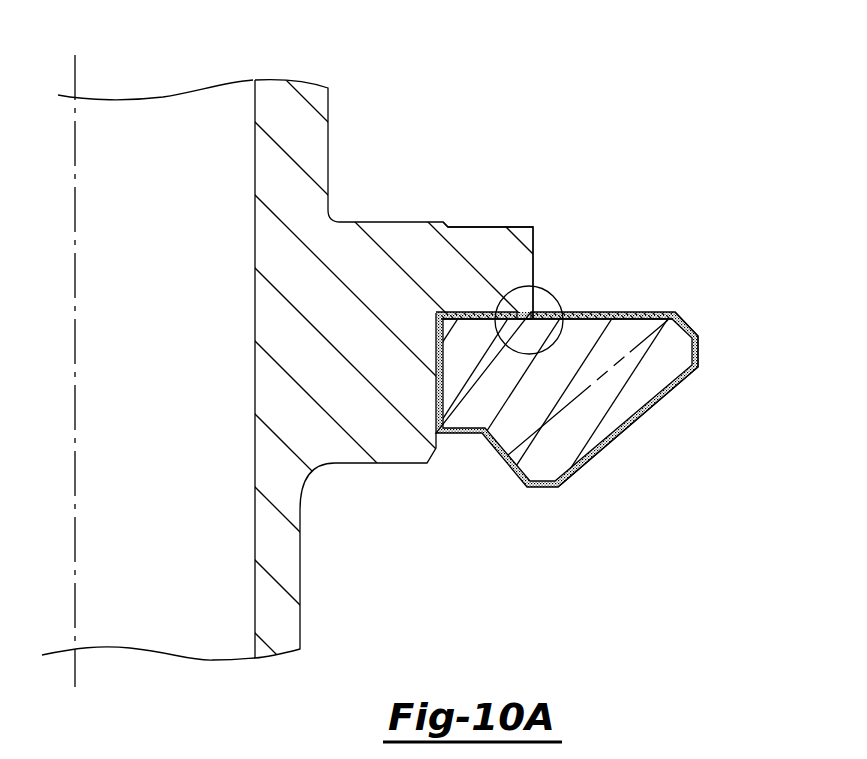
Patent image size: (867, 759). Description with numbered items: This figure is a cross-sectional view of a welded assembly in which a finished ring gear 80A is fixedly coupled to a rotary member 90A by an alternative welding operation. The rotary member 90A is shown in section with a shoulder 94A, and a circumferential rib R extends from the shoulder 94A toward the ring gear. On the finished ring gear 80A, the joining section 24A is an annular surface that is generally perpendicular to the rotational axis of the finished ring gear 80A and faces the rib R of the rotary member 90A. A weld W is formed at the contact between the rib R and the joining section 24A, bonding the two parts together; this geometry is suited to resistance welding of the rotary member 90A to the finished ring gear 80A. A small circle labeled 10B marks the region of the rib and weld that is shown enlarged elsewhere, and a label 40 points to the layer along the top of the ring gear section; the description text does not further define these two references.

The rotary member 90A is at (303, 148).
The shoulder 94A is at (480, 248).
The joining section 24A is at (647, 306).
The top layer / weld strip 40 is at (580, 316).
The circumferential rib R is at (536, 316).
The weld W is at (525, 336).
The detail view circle 10B is at (533, 312).
The finished ring gear 80A is at (668, 358).